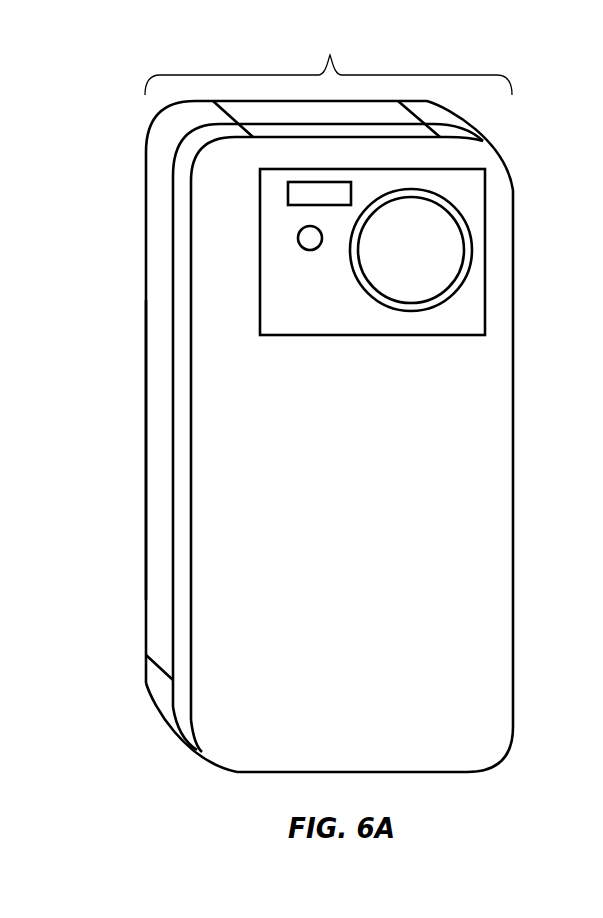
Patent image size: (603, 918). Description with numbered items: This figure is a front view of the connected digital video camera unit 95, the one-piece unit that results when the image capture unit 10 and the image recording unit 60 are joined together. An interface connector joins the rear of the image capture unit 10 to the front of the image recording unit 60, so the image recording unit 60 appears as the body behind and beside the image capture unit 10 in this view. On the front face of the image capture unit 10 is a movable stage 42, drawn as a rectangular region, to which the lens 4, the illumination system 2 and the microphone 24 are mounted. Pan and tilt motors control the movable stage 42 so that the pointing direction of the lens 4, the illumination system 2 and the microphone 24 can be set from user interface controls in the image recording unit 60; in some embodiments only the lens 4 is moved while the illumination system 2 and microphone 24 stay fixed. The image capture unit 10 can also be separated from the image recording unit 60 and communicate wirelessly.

The image capture unit 10 is at (513, 407).
The image recording unit 60 is at (150, 418).
The connected digital video camera unit 95 is at (328, 63).
The movable stage 42 is at (485, 303).
The illumination system 2 is at (288, 193).
The microphone 24 is at (298, 238).
The lens 4 is at (372, 265).